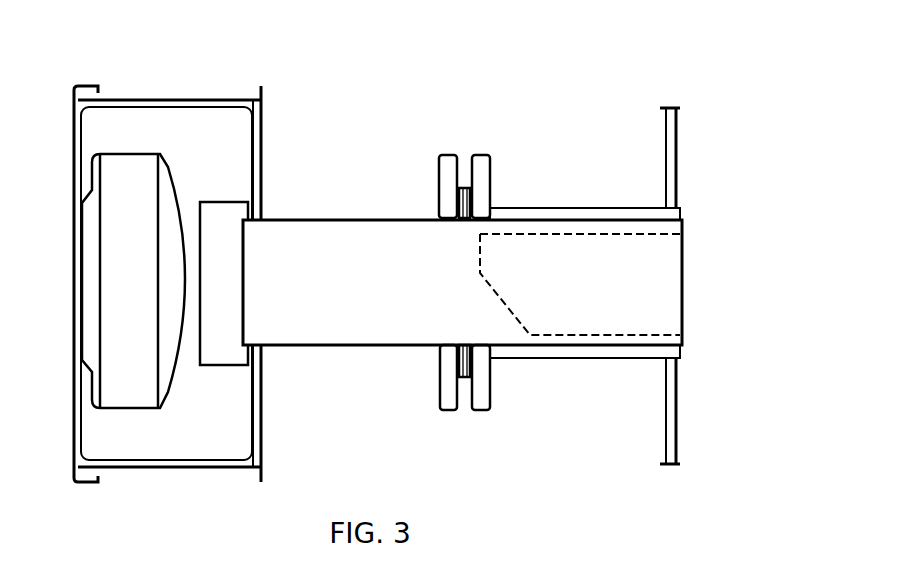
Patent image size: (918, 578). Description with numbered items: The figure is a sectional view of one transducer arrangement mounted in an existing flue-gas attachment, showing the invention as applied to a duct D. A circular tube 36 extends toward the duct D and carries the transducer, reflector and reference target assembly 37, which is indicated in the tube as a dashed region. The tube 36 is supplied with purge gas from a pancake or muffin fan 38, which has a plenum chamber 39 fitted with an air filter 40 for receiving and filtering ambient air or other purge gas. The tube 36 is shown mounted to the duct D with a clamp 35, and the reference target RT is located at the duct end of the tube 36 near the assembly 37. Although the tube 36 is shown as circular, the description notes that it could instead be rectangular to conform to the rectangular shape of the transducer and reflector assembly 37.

The clamp 35 is at (482, 178).
The circular tube 36 is at (347, 230).
The transducer, reflector and reference target assembly 37 is at (525, 315).
The pancake or muffin fan 38 is at (222, 212).
The plenum chamber 39 is at (185, 118).
The air filter 40 is at (112, 156).
The duct D is at (675, 162).
The plate RT is at (682, 235).